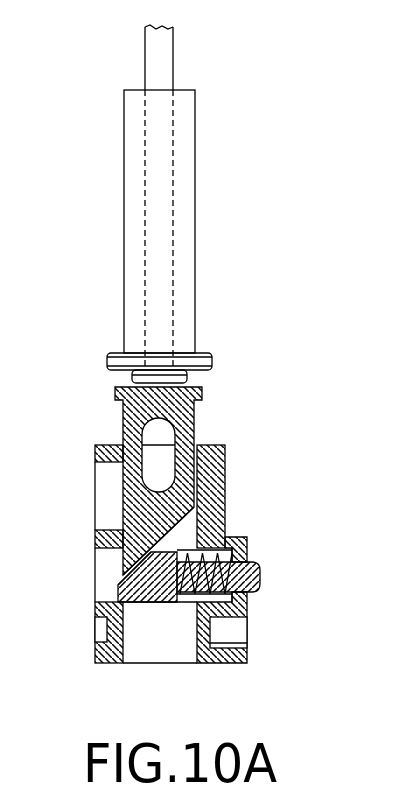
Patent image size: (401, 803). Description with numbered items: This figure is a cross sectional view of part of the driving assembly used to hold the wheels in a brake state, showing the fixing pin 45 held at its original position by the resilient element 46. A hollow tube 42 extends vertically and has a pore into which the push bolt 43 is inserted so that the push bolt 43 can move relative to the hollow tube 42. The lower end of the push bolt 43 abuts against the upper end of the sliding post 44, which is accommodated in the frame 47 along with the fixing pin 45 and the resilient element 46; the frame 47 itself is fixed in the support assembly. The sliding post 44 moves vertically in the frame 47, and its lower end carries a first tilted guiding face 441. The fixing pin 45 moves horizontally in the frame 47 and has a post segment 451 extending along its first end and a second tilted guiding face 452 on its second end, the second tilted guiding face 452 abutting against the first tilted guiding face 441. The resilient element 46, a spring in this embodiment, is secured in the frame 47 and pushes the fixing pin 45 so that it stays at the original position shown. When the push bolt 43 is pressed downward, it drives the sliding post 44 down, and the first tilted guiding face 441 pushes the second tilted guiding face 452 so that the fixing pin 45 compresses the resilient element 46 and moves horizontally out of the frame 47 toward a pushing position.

The hollow tube 42 is at (188, 185).
The push bolt 43 is at (155, 58).
The sliding post 44 is at (123, 417).
The first tilted guiding face 441 is at (184, 520).
The fixing pin 45 is at (118, 598).
The post segment 451 is at (252, 591).
The second tilted guiding face 452 is at (120, 583).
The resilient element 46 is at (197, 597).
The frame 47 is at (215, 445).